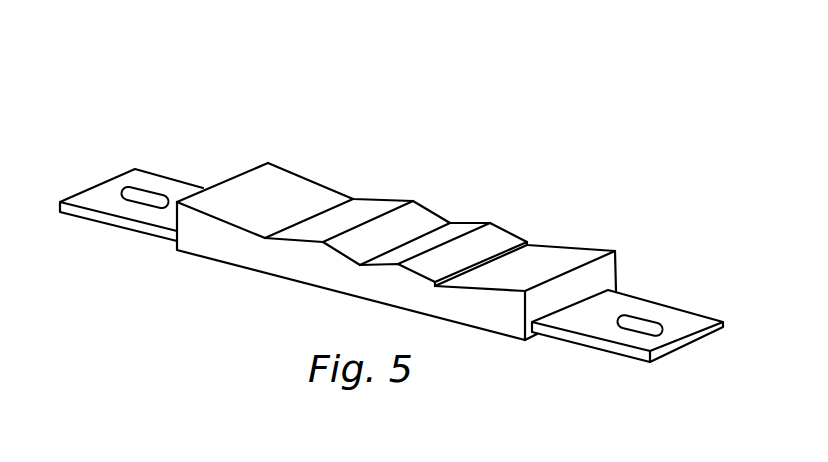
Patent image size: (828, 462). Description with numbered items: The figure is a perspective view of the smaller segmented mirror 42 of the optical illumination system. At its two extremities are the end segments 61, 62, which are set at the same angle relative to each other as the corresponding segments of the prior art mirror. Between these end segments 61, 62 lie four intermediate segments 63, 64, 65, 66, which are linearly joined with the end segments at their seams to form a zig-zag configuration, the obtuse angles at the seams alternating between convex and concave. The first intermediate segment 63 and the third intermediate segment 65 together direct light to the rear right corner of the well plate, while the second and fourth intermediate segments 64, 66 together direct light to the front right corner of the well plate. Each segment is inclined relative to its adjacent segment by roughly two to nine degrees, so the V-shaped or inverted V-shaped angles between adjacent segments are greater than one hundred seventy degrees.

The segmented mirror 42 is at (391, 189).
The end segment 61 is at (292, 190).
The end segment 62 is at (543, 257).
The first intermediate segment 63 is at (370, 208).
The second intermediate segment 64 is at (420, 223).
The third intermediate segment 65 is at (455, 228).
The fourth intermediate segment 66 is at (494, 244).